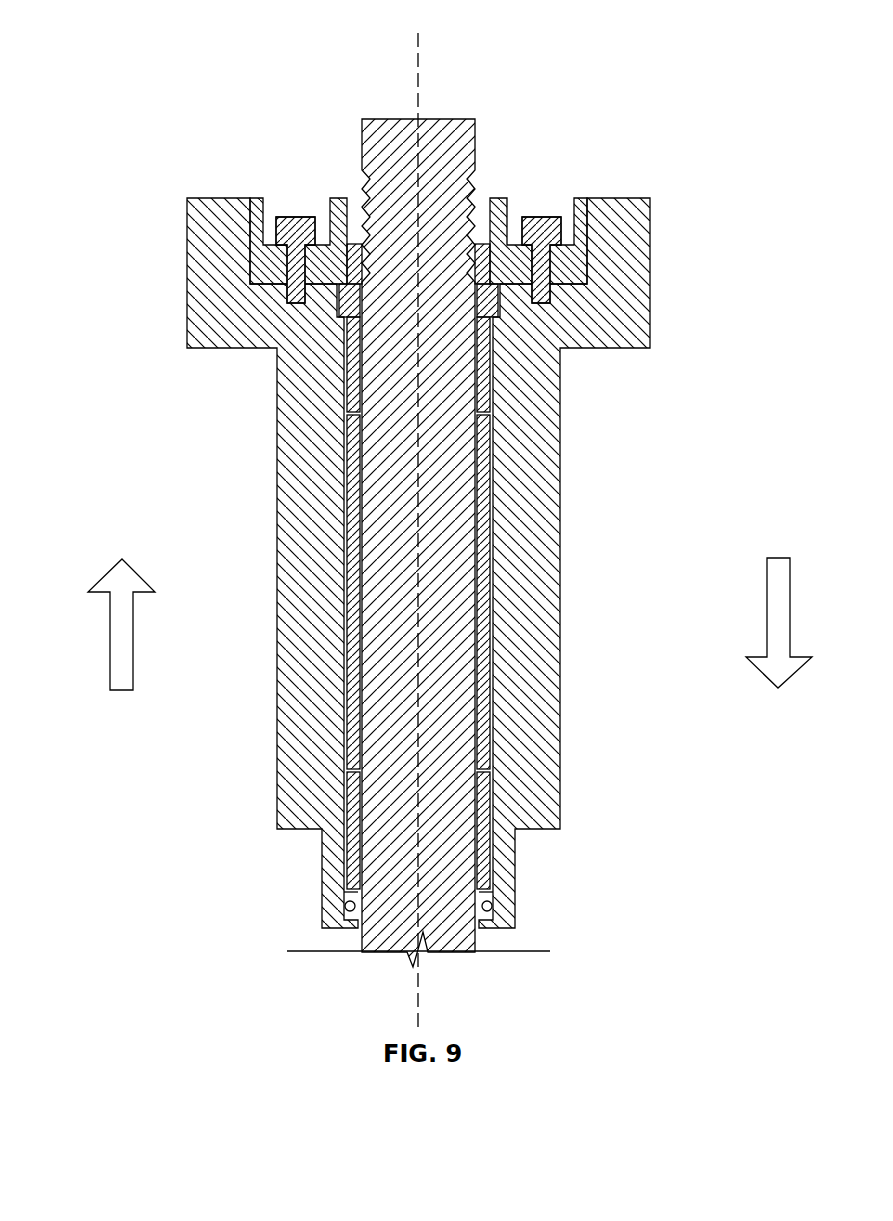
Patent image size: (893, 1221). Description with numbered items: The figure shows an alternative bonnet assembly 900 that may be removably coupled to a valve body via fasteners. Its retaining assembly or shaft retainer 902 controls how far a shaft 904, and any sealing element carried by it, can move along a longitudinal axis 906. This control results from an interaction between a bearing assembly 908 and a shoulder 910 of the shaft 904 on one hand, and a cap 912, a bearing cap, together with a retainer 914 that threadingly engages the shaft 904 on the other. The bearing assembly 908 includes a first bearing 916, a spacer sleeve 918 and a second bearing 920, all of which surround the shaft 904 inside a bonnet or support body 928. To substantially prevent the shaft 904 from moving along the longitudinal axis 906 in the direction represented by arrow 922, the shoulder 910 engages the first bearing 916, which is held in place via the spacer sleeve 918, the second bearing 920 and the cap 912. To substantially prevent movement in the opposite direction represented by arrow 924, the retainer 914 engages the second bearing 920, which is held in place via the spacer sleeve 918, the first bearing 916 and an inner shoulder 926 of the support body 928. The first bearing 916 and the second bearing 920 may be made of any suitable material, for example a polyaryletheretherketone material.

The bonnet assembly 900 is at (274, 52).
The shaft retainer 902 is at (592, 422).
The shaft 904 is at (378, 658).
The longitudinal axis 906 is at (419, 85).
The bearing assembly 908 is at (514, 626).
The shoulder 910 is at (350, 886).
The cap 912 is at (257, 197).
The retainer 914 is at (355, 245).
The first bearing 916 is at (492, 862).
The spacer sleeve 918 is at (360, 553).
The second bearing 920 is at (352, 370).
The arrow 922 is at (110, 640).
The arrow 924 is at (767, 625).
The inner shoulder 926 is at (347, 898).
The support body 928 is at (198, 272).